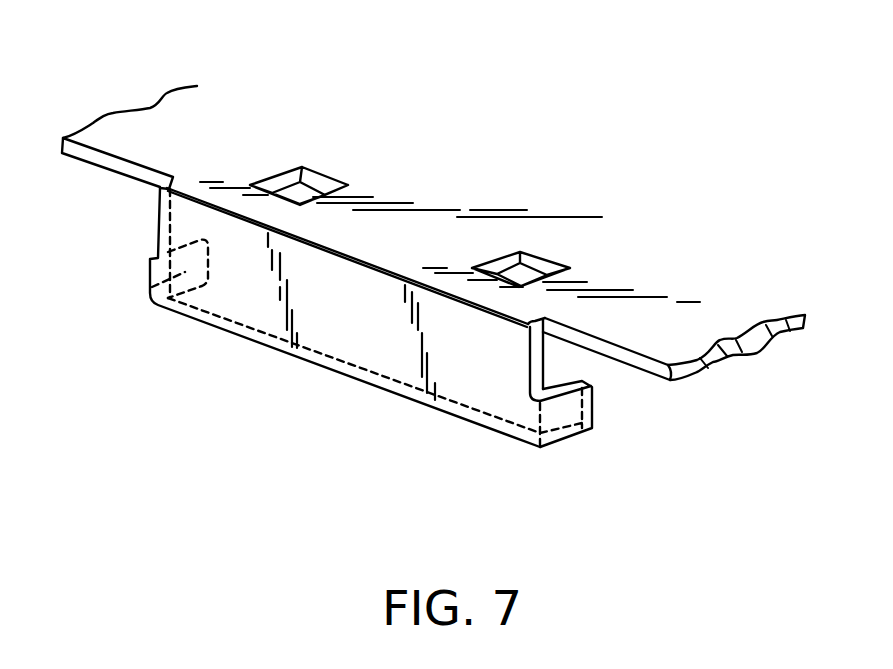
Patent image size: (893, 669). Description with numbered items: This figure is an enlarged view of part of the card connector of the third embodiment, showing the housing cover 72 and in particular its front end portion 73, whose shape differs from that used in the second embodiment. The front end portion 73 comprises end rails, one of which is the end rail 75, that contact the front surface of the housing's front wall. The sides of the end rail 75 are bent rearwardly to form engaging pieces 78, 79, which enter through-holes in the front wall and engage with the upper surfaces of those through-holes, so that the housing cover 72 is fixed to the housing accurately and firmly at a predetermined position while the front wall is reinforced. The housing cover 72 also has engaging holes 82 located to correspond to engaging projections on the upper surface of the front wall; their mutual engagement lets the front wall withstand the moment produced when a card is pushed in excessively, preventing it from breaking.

The housing cover 72 is at (732, 375).
The front end portion 73 is at (238, 343).
The end rail 75 is at (348, 337).
The engaging piece 78 is at (150, 287).
The engaging piece 79 is at (568, 413).
The engaging hole 82 is at (282, 182).